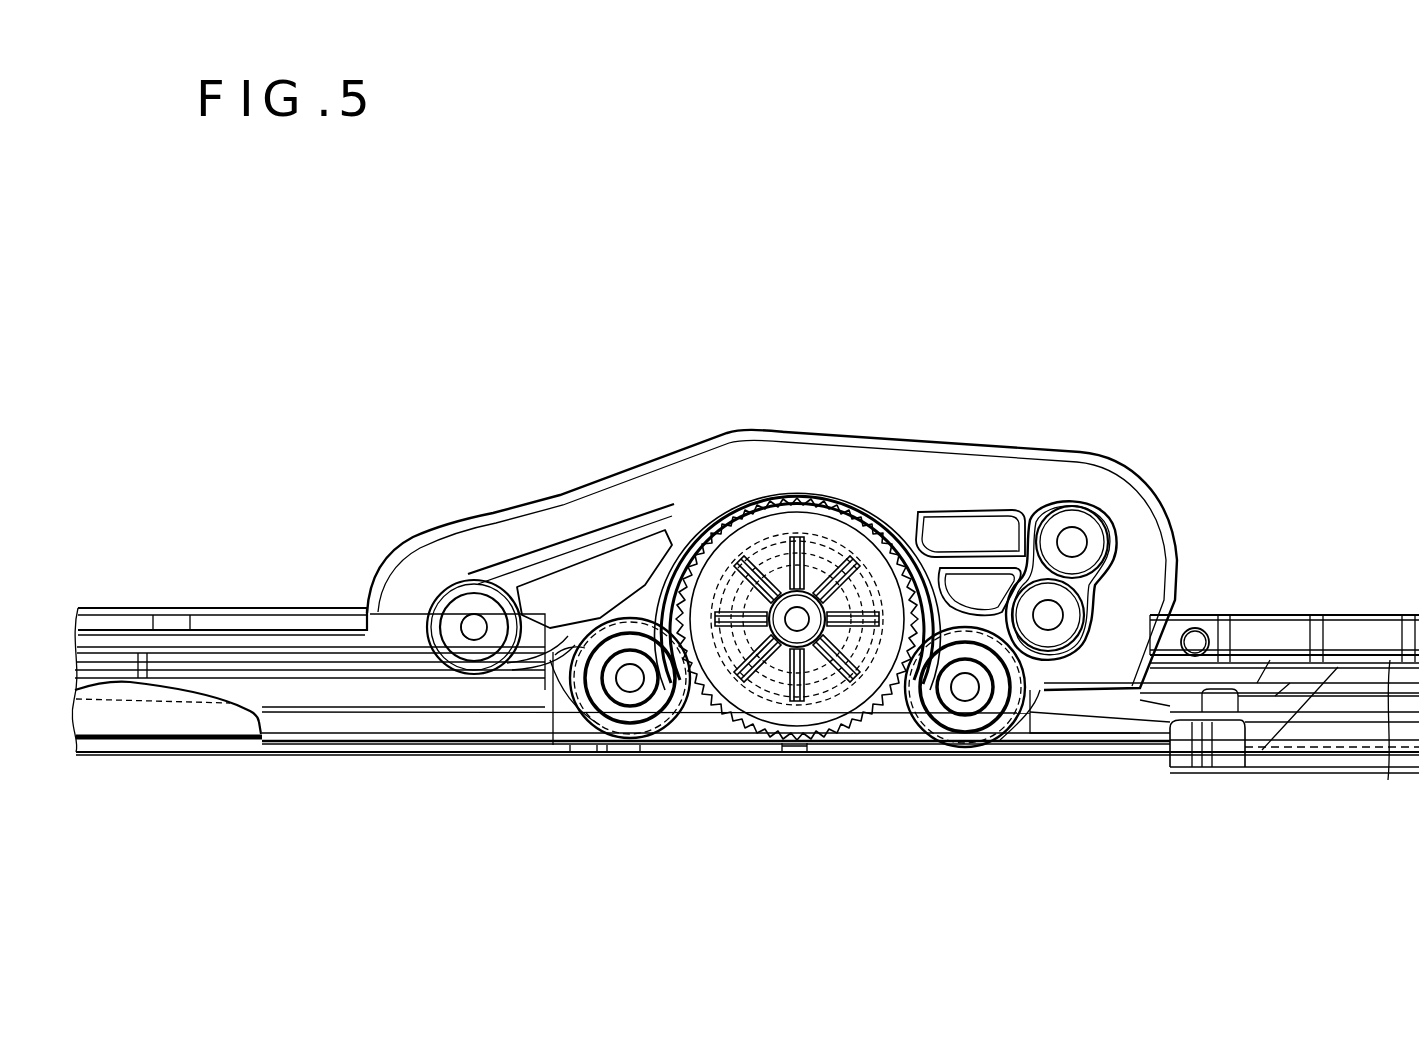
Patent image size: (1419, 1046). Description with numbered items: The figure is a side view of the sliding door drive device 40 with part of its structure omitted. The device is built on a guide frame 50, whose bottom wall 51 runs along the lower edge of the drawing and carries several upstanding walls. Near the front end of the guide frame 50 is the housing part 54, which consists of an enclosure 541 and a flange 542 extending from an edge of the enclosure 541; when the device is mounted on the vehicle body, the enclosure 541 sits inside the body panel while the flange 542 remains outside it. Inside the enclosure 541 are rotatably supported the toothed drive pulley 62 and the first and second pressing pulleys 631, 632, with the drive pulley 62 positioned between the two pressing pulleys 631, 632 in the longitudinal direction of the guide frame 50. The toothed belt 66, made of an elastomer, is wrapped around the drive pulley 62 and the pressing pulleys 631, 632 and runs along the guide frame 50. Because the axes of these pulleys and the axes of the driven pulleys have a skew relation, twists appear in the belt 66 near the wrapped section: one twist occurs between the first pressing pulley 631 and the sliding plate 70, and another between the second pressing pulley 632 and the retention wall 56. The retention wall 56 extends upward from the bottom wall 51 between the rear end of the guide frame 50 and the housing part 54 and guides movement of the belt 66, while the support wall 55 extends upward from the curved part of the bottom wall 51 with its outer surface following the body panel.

The door drive device 40 is at (281, 371).
The guide frame 50 is at (243, 756).
The bottom wall 51 is at (850, 760).
The housing part 54 is at (642, 464).
The enclosure 541 is at (528, 560).
The flange 542 is at (1128, 463).
The support wall 55 is at (1352, 735).
The retention wall 56 is at (175, 690).
The drive pulley 62 is at (770, 705).
The first pressing pulley 631 is at (1003, 725).
The second pressing pulley 632 is at (628, 728).
The belt 66 is at (800, 480).
The sliding plate 70 is at (1195, 770).